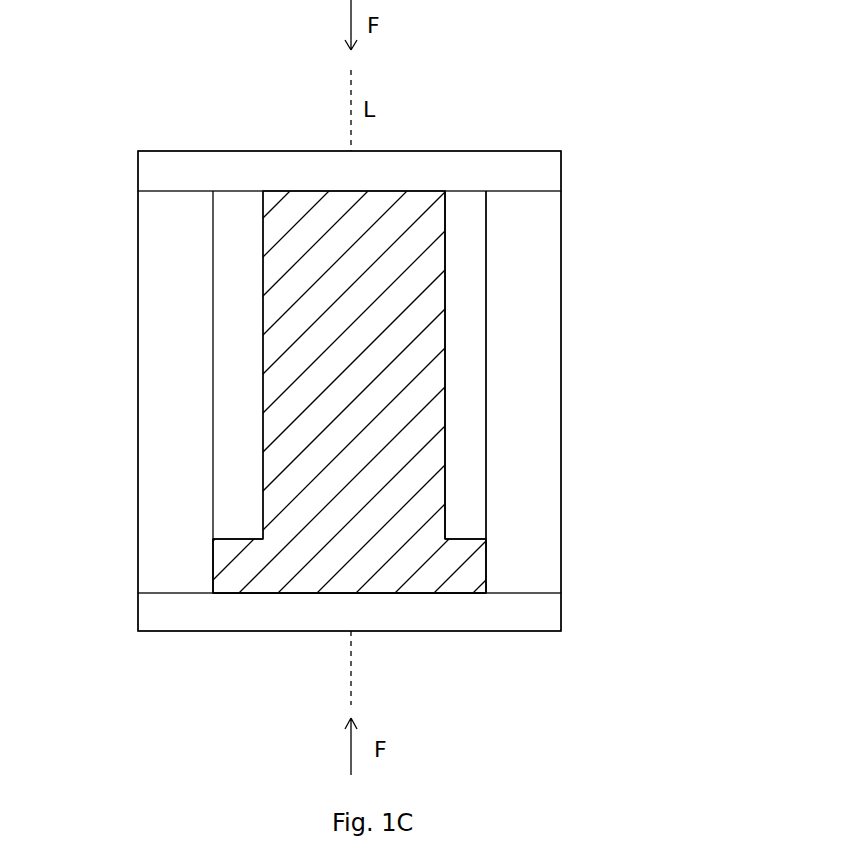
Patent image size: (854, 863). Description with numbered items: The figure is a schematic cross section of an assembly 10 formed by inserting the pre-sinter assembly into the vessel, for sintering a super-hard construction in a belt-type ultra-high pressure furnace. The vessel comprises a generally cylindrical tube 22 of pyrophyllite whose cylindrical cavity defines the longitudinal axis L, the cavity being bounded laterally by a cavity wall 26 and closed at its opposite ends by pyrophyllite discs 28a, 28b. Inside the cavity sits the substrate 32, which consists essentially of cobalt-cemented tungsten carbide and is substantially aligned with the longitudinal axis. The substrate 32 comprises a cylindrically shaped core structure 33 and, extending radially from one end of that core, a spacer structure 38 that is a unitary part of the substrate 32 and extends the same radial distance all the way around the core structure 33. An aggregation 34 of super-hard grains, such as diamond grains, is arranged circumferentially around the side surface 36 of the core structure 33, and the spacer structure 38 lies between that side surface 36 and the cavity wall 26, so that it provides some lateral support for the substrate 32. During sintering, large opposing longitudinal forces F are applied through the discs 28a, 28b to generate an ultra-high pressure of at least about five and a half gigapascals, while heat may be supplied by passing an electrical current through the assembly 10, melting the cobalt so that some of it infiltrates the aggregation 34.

The assembly 10 is at (586, 107).
The tube 22 is at (516, 252).
The cavity wall 26 is at (486, 333).
The disc 28a is at (544, 618).
The disc 28b is at (542, 164).
The substrate 32 is at (405, 490).
The core structure 33 is at (250, 423).
The aggregation 34 is at (462, 373).
The side surface 36 is at (445, 417).
The spacer structure 38 is at (463, 570).